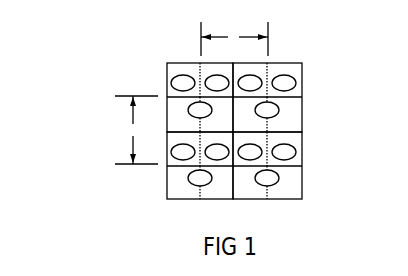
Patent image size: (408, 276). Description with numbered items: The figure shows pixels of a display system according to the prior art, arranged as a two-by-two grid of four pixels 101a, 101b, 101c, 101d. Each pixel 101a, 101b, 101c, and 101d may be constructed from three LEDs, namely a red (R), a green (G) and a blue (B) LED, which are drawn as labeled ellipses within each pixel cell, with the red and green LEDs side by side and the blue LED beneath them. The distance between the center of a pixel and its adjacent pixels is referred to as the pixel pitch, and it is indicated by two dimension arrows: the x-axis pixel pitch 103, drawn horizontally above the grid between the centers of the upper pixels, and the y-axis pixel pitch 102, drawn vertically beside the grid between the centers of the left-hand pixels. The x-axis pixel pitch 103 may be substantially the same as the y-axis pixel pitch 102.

The pixel 101a is at (179, 188).
The pixel 101b is at (280, 172).
The pixel 101c is at (280, 100).
The pixel 101d is at (167, 70).
The y-axis pixel pitch 102 is at (118, 132).
The x-axis pixel pitch 103 is at (280, 35).